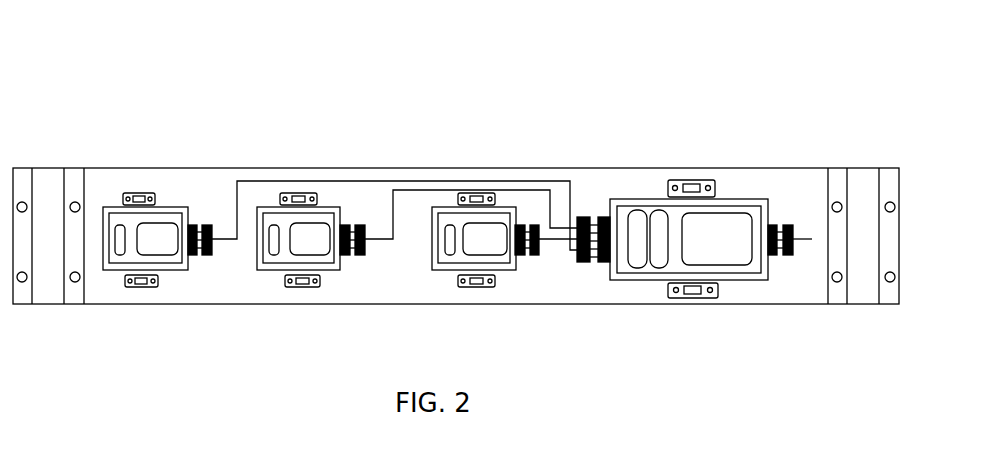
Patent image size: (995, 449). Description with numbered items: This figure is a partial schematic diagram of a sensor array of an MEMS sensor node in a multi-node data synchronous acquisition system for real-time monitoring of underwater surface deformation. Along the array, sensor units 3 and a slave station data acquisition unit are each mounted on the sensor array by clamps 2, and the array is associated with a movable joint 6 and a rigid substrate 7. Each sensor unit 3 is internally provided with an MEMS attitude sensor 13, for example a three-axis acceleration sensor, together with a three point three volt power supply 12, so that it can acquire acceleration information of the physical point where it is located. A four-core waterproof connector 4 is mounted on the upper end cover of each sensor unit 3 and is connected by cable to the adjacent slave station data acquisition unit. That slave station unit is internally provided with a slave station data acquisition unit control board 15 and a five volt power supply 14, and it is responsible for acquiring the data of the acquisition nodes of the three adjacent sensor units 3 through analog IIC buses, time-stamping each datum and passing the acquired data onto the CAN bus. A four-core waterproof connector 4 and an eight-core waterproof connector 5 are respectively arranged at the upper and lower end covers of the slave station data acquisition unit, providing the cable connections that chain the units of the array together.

The movable joint 6 is at (116, 164).
The sensor unit 3 is at (153, 213).
The four-core waterproof connector 4 is at (280, 139).
The clamp 2 is at (341, 155).
The power supply 12 is at (505, 139).
The MEMS attitude sensor 13 is at (547, 139).
The eight-core waterproof connector 5 is at (648, 143).
The power supply 14 is at (702, 146).
The slave station data acquisition unit control board 15 is at (764, 144).
The rigid substrate 7 is at (838, 139).